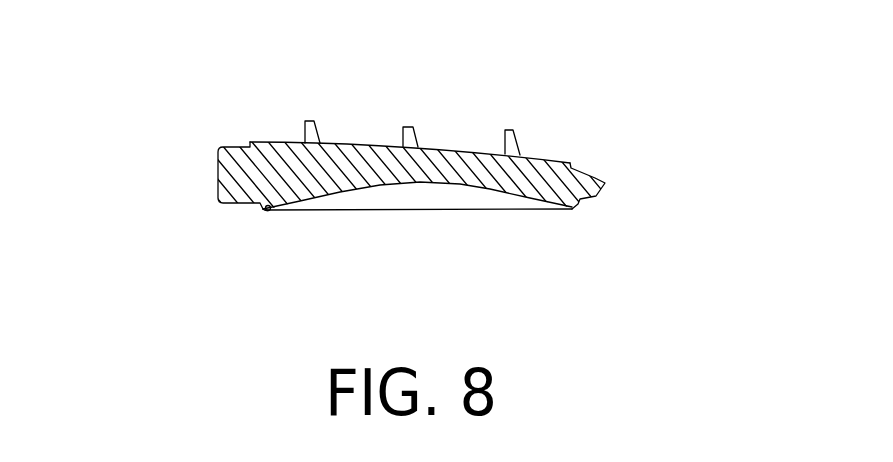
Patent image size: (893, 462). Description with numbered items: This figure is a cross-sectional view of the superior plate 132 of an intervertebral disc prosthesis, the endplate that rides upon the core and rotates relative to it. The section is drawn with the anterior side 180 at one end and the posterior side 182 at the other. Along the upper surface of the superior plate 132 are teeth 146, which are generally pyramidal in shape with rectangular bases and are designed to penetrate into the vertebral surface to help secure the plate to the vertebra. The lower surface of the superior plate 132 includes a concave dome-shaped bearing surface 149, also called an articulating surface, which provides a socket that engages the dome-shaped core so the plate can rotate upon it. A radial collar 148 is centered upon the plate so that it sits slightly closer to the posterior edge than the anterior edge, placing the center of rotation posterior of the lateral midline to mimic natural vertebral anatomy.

The superior plate 132 is at (589, 106).
The teeth 146 is at (410, 127).
The radial collar 148 is at (263, 212).
The concave dome-shaped bearing surface 149 is at (485, 188).
The anterior side 180 is at (218, 165).
The posterior side 182 is at (605, 182).